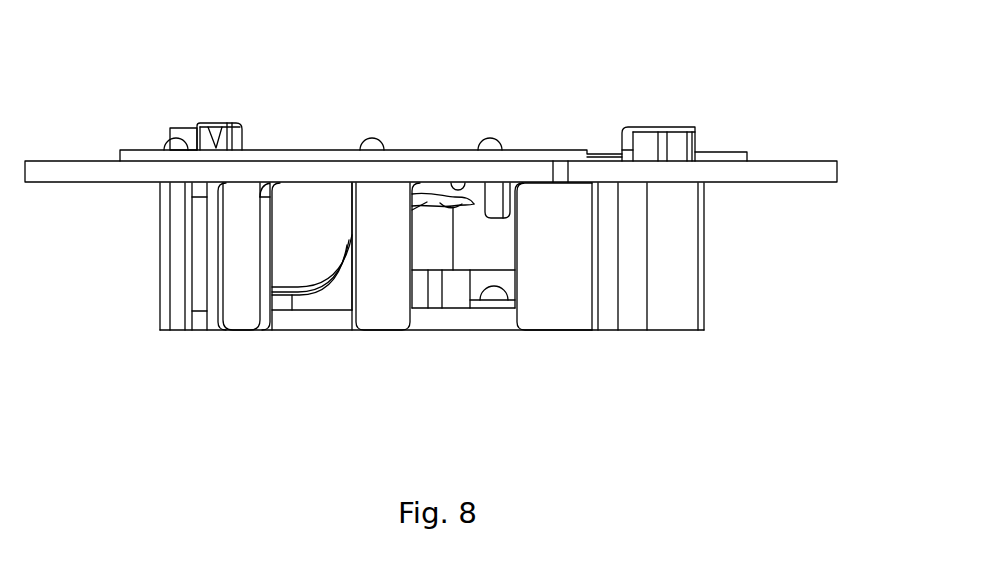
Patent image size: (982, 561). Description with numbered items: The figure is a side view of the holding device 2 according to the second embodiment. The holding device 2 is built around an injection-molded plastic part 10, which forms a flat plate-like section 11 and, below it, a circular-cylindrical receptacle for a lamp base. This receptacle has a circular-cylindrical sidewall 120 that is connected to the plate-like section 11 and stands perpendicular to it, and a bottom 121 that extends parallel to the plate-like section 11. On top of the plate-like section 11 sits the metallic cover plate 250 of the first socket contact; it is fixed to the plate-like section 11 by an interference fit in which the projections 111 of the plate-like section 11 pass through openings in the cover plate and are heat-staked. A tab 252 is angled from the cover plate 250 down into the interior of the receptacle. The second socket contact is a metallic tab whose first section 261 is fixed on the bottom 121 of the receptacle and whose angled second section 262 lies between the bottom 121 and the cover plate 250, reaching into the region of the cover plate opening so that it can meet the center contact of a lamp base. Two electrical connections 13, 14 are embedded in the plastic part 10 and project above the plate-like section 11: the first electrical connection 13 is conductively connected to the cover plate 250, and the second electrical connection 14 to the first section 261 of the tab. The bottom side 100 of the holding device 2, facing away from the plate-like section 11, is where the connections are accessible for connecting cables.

The holding device 2 is at (73, 112).
The injection-molded plastic part 10 is at (708, 295).
The plate-like section 11 is at (798, 161).
The first electrical connection 13 is at (652, 127).
The second electrical connection 14 is at (208, 127).
The rear side or bottom side 100 is at (200, 330).
The projections 111 is at (371, 138).
The circular-cylindrical sidewall 120 is at (558, 330).
The bottom 121 is at (430, 330).
The cover plate 250 is at (314, 155).
The tab 252 is at (493, 202).
The first section 261 is at (306, 287).
The second section 262 is at (446, 208).